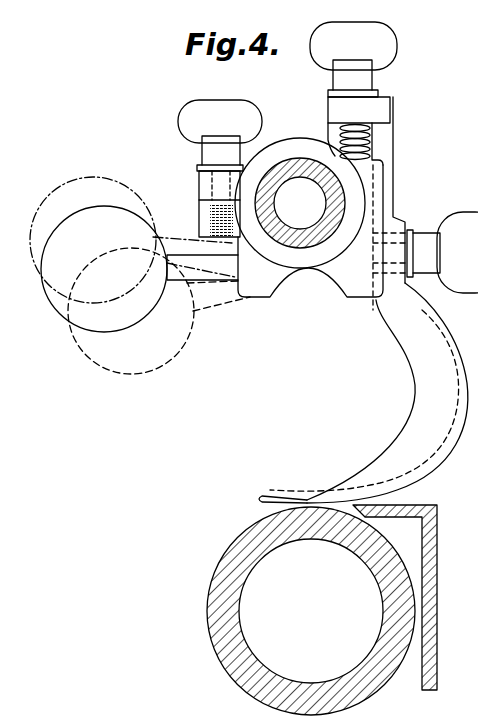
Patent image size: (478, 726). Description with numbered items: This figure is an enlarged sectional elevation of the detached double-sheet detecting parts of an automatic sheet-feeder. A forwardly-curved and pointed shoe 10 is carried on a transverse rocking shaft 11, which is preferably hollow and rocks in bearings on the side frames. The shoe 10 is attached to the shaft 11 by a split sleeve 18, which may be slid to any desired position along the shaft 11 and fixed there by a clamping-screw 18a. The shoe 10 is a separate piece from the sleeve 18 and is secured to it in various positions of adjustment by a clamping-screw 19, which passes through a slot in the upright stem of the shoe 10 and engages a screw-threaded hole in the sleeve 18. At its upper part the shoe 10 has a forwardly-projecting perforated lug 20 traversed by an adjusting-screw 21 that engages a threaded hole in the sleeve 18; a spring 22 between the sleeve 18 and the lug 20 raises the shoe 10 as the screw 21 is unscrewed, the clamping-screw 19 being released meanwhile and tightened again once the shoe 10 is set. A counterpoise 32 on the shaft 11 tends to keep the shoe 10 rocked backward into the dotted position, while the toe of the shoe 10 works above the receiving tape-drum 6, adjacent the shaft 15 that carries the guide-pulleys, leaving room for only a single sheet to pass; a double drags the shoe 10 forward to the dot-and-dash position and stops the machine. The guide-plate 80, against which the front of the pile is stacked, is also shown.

The receiving tape-drum 6 is at (208, 607).
The shoe 10 is at (369, 393).
The rocking shaft 11 is at (286, 158).
The shaft 15 is at (312, 497).
The split sleeve 18 is at (293, 257).
The clamping-screw 18a is at (220, 168).
The clamping-screw 19 is at (422, 248).
The perforated lug 20 is at (366, 190).
The adjusting-screw 21 is at (390, 58).
The spring 22 is at (338, 141).
The counterpoise 32 is at (140, 275).
The guide-plate 80 is at (437, 560).